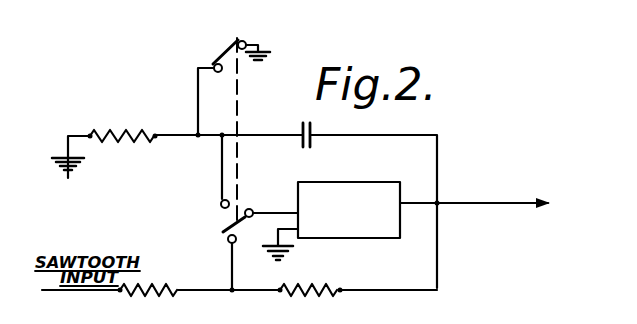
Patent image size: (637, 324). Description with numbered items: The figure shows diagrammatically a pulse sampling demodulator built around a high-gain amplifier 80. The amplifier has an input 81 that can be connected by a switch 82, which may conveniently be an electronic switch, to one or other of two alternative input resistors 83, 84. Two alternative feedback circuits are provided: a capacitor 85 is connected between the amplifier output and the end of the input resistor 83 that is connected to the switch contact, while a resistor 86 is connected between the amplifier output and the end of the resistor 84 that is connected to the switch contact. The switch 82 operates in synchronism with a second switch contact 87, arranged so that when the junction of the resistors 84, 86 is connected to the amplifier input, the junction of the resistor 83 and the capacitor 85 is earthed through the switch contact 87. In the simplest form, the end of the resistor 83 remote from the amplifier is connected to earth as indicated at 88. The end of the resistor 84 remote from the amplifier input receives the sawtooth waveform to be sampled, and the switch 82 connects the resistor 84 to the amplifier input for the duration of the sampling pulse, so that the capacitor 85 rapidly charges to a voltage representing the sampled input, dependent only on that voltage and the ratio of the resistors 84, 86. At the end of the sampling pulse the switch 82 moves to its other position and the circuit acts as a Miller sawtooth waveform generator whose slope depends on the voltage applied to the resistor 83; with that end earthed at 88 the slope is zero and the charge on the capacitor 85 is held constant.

The amplifier 80 is at (380, 182).
The input 81 is at (266, 212).
The switch 82 is at (225, 228).
The input resistor 83 is at (137, 140).
The input resistor 84 is at (153, 288).
The capacitor 85 is at (304, 125).
The resistor 86 is at (328, 286).
The switch contact 87 is at (215, 60).
The earth connection 88 is at (72, 173).